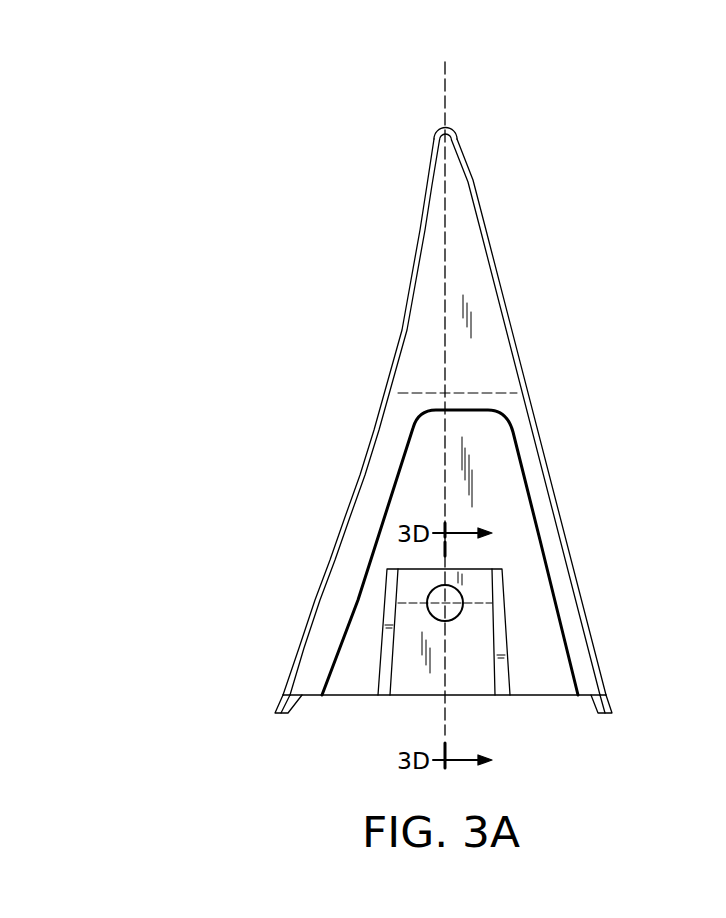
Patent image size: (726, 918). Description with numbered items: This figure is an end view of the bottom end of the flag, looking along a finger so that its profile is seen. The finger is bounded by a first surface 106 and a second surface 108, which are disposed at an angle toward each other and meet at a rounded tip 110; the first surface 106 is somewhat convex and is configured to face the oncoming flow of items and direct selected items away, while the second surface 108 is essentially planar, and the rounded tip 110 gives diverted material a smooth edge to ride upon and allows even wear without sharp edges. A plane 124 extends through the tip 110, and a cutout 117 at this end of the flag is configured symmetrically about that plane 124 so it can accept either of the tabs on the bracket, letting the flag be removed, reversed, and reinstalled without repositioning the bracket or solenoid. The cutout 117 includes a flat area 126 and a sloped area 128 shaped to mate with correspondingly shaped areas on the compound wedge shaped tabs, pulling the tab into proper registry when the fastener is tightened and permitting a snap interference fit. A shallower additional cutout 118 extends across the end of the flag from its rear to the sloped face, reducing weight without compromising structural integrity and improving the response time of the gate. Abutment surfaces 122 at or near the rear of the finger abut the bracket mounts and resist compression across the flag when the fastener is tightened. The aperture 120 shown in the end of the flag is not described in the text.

The first surfaces 106 is at (390, 373).
The second surfaces 108 is at (495, 266).
The tips 110 is at (443, 125).
The cutouts 117 is at (500, 621).
The cutouts 118 is at (515, 448).
The hole 120 is at (430, 593).
The abutment surfaces 122 is at (274, 707).
The plane 124 is at (447, 90).
The flat areas 126 is at (477, 635).
The sloped areas 128 is at (479, 584).